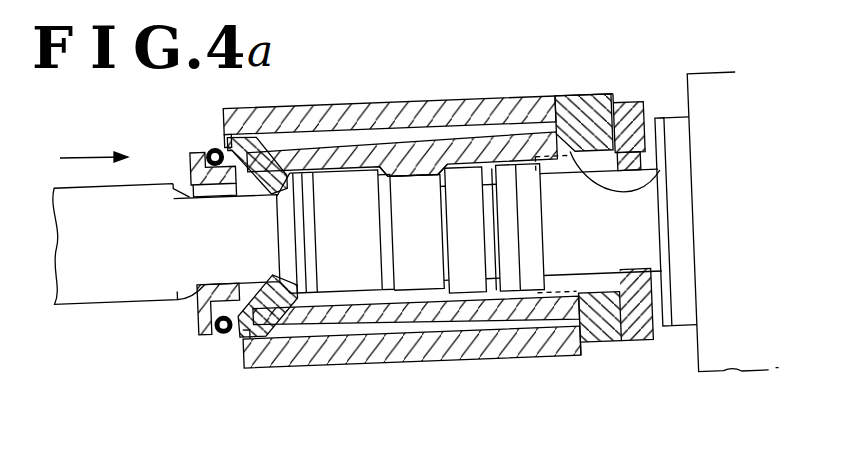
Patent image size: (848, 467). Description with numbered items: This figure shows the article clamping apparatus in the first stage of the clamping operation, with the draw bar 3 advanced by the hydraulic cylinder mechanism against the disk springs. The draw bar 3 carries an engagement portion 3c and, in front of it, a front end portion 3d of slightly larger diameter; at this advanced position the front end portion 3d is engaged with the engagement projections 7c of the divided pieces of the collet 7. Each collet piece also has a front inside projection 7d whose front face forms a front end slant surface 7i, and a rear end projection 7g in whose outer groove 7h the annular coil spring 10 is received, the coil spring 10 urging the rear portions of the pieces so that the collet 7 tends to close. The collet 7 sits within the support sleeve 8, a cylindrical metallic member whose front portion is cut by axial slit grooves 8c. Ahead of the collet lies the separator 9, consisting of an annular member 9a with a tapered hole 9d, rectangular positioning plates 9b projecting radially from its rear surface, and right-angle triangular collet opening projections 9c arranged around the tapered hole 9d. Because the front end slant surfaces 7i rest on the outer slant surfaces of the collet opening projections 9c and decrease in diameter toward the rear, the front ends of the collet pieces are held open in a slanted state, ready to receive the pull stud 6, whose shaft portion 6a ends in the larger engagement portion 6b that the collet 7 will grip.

The draw bar 3 is at (90, 287).
The engagement portion 3c is at (338, 292).
The front end portion 3d is at (490, 300).
The pull stud 6 is at (643, 222).
The shaft portion 6a is at (582, 257).
The engagement portion 6b is at (533, 203).
The collet 7 is at (363, 320).
The engagement projection 7c is at (478, 170).
The front inside projection 7d is at (593, 342).
The rear end projection 7g is at (207, 297).
The groove 7h is at (200, 308).
The front end slant surface 7i is at (570, 98).
The support sleeve 8 is at (318, 104).
The slit grooves 8c is at (533, 337).
The separator 9 is at (627, 96).
The annular member 9a is at (692, 78).
The positioning plates 9b is at (553, 160).
The collet opening projections 9c is at (647, 195).
The tapered hole 9d is at (663, 157).
The coil spring 10 is at (220, 337).